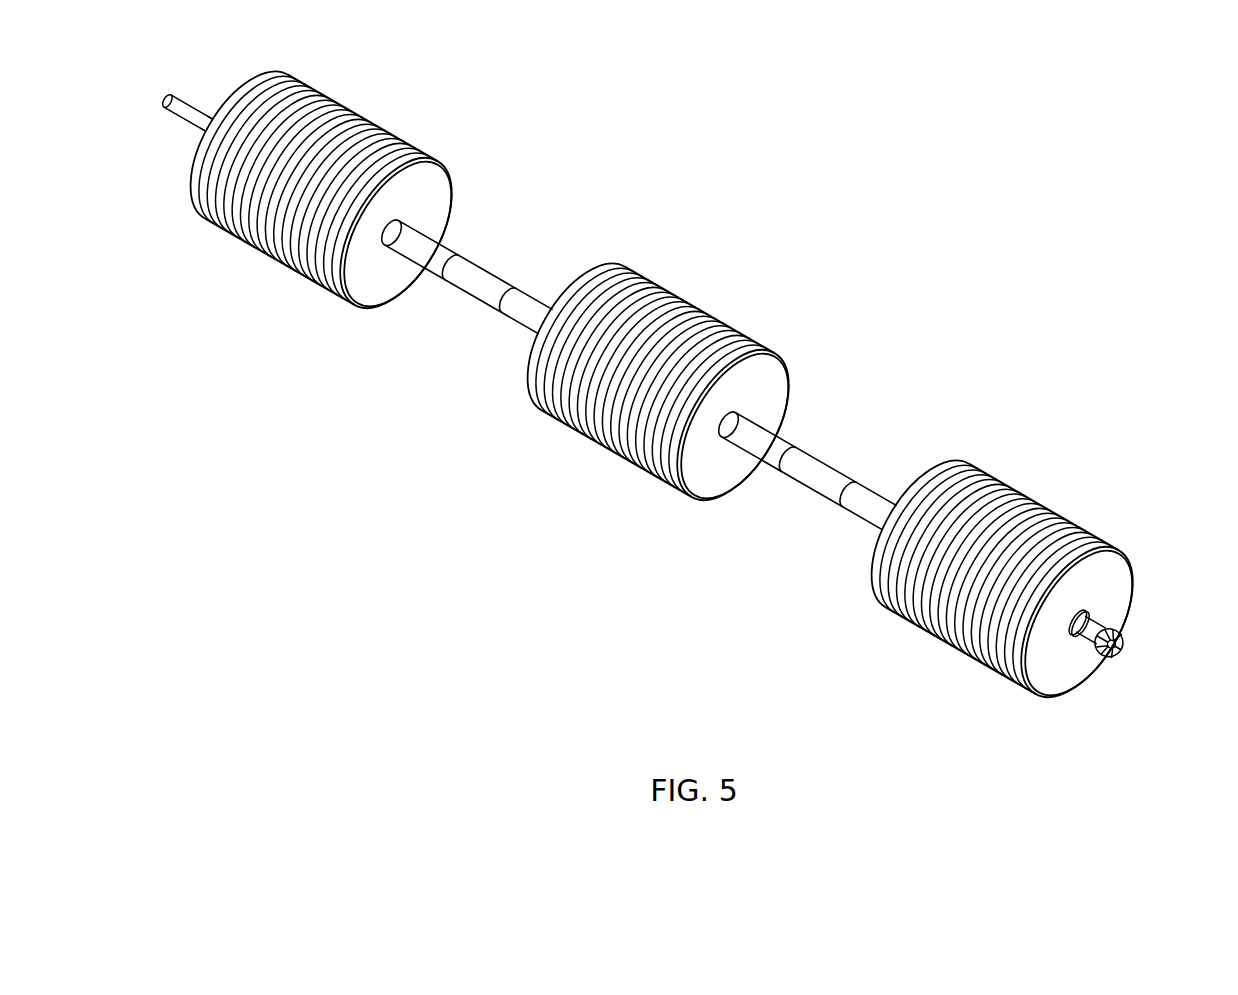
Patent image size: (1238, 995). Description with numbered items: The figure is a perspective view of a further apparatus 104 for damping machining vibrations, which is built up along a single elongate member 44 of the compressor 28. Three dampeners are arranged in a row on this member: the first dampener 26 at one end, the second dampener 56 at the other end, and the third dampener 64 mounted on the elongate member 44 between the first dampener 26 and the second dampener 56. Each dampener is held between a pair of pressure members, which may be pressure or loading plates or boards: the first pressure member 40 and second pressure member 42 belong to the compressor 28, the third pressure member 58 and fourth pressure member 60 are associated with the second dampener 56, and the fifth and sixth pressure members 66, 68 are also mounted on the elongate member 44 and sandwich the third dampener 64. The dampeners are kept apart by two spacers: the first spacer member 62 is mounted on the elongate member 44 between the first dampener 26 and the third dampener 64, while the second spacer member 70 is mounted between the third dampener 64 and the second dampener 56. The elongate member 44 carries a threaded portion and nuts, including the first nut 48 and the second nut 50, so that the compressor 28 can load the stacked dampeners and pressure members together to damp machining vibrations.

The first dampener 26 is at (1009, 578).
The compressor 28 is at (1173, 667).
The first pressure member 40 is at (1062, 675).
The second pressure member 42 is at (874, 553).
The elongate member 44 is at (1092, 620).
The first nut 48 is at (1124, 644).
The second nut 50 is at (214, 113).
The second dampener 56 is at (299, 187).
The third pressure member 58 is at (196, 150).
The fourth pressure member 60 is at (374, 274).
The spacer member 62 is at (830, 474).
The third dampener 64 is at (666, 372).
The fifth pressure member 66 is at (754, 362).
The sixth pressure member 68 is at (597, 270).
The second spacer member 70 is at (487, 295).
The apparatus 104 is at (1125, 166).